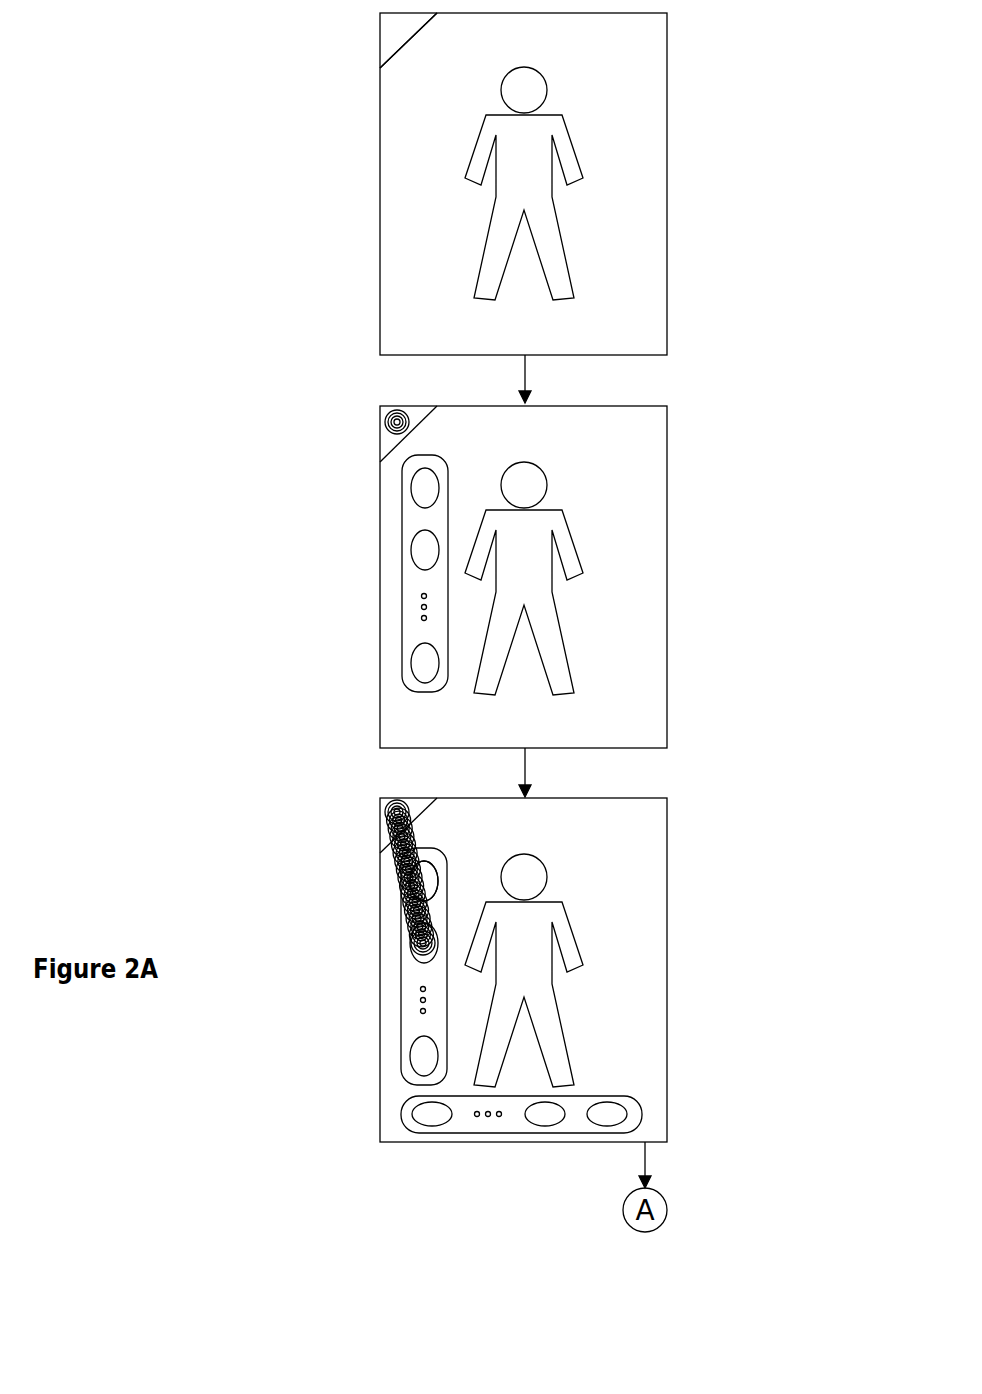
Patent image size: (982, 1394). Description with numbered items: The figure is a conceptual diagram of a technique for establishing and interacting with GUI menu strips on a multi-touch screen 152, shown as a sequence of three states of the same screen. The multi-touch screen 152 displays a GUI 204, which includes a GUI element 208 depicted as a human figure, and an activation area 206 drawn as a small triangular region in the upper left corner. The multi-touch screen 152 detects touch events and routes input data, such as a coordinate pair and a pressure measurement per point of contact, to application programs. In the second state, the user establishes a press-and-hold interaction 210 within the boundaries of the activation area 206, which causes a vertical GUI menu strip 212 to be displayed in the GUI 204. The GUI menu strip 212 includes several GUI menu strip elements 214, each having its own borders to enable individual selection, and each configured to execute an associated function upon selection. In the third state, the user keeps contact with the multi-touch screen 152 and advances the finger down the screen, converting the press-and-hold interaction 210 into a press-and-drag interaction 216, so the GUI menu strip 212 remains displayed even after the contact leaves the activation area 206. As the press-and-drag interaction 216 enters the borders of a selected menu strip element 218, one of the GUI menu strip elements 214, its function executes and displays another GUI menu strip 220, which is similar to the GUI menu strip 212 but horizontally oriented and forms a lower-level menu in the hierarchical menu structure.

The multi-touch screen 152 is at (379, 178).
The GUI 204 is at (647, 30).
The activation area 206 is at (398, 28).
The GUI element 208 is at (571, 141).
The press-and-hold interaction 210 is at (386, 417).
The GUI menu strip 212 is at (405, 466).
The GUI menu strip elements 214 is at (411, 666).
The press-and-drag interaction 216 is at (386, 809).
The selected menu item 218 is at (438, 872).
The GUI menu strip 220 is at (413, 1133).